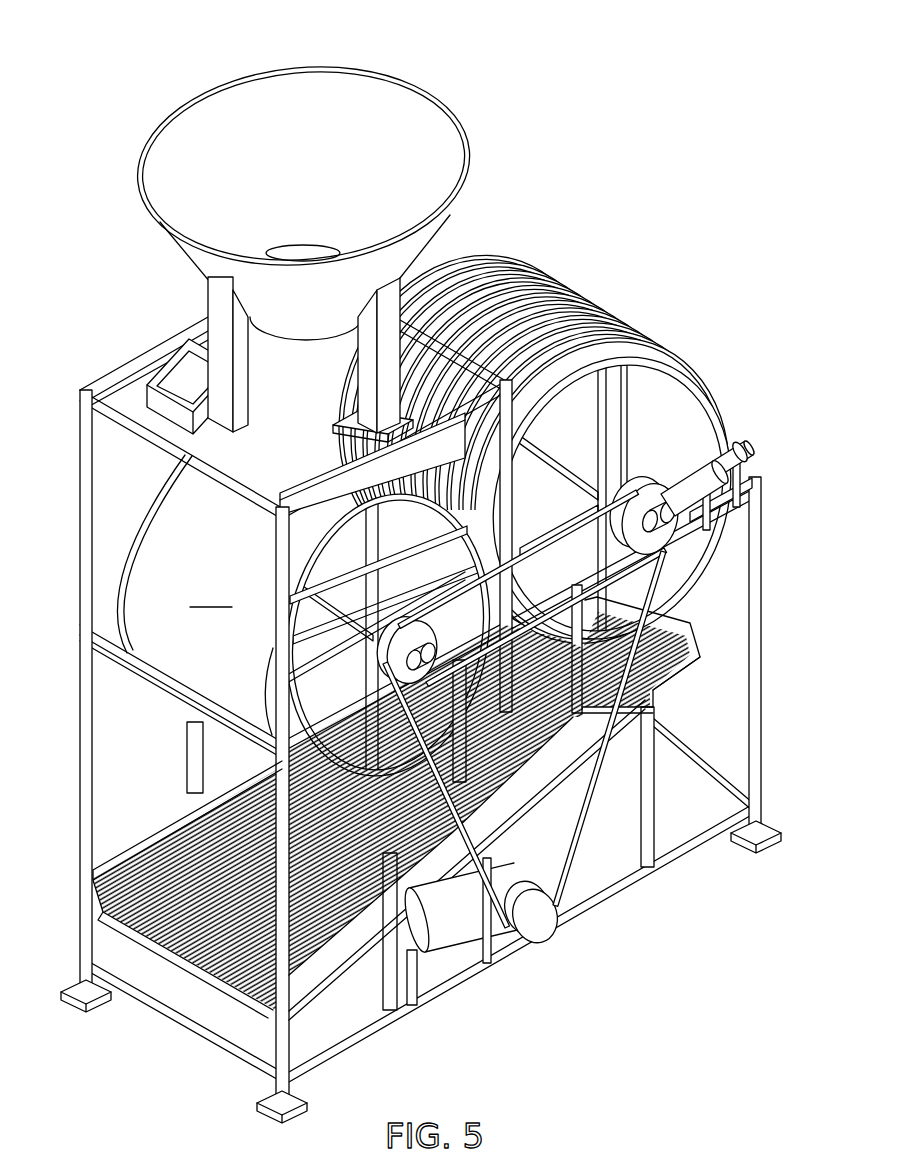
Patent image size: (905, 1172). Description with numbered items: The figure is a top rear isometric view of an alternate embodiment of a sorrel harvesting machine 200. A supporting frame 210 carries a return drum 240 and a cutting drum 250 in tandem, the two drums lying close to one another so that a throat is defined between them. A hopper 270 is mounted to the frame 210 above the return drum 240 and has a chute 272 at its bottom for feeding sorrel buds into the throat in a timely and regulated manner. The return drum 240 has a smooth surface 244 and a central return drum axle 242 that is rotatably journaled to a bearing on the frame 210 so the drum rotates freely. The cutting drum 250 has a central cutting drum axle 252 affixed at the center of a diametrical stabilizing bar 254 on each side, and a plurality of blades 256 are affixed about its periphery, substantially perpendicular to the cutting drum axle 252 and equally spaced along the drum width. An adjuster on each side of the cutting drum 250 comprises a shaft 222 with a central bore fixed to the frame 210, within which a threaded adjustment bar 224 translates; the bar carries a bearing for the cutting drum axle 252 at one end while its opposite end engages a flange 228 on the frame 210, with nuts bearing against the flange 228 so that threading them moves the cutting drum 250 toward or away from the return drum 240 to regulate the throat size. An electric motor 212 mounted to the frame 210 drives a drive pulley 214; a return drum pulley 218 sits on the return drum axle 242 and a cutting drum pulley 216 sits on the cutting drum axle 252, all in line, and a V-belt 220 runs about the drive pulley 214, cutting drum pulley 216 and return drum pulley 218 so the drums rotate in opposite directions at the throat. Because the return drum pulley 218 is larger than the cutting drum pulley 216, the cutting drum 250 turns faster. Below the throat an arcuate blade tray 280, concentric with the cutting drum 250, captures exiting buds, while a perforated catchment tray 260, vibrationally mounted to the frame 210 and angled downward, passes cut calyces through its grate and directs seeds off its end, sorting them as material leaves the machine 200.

The sorrel harvesting machine 200 is at (697, 66).
The supporting frame 210 is at (72, 745).
The electric motor 212 is at (428, 950).
The drive pulley 214 is at (545, 935).
The cutting drum pulley 216 is at (608, 545).
The return drum pulley 218 is at (450, 625).
The V-belt 220 is at (575, 870).
The shaft 222 is at (725, 447).
The threaded adjustment bar 224 is at (765, 456).
The flange 228 is at (735, 490).
The return drum 240 is at (151, 598).
The return drum axle 242 is at (385, 680).
The smooth surface 244 is at (125, 520).
The cutting drum 250 is at (543, 449).
The cutting drum axle 252 is at (700, 530).
The diametrical stabilizing bar 254 is at (625, 447).
The blades 256 is at (555, 275).
The catchment tray 260 is at (150, 820).
The hopper 270 is at (465, 132).
The chute 272 is at (175, 355).
The blade tray 280 is at (612, 688).